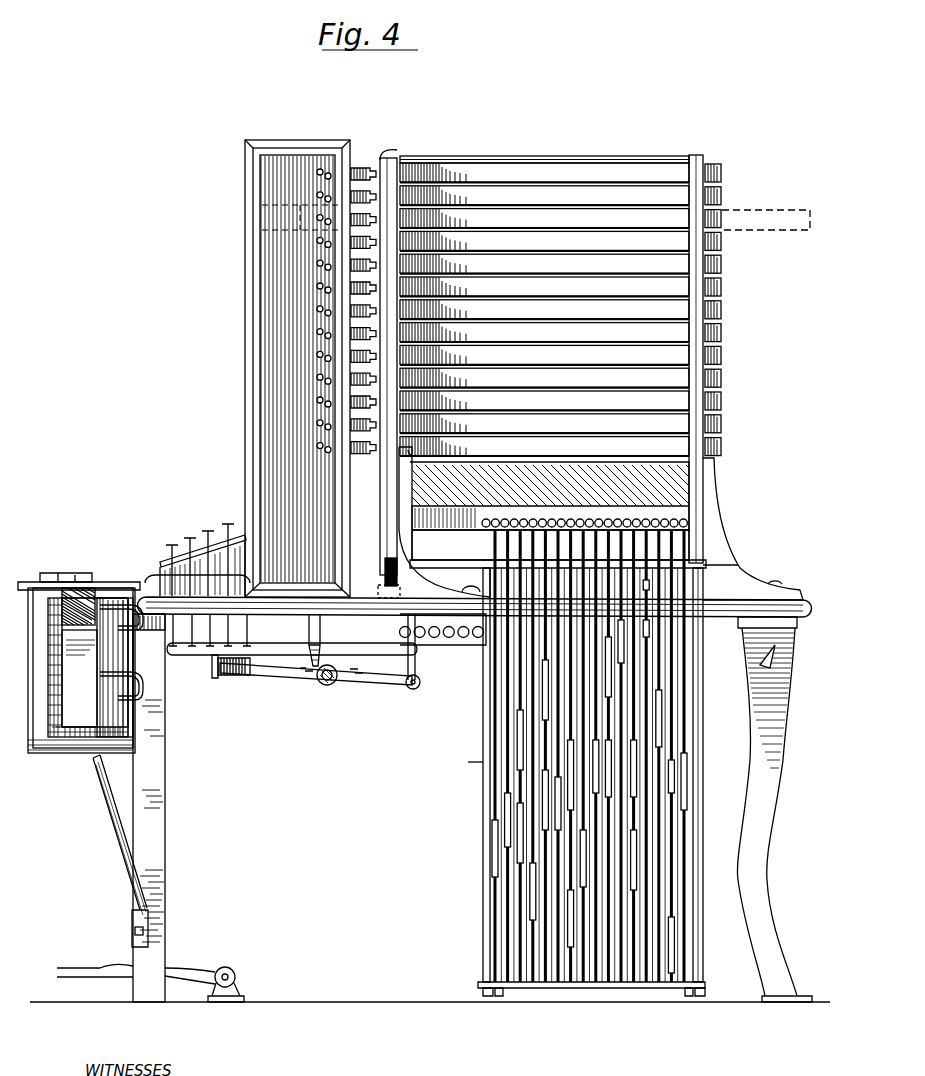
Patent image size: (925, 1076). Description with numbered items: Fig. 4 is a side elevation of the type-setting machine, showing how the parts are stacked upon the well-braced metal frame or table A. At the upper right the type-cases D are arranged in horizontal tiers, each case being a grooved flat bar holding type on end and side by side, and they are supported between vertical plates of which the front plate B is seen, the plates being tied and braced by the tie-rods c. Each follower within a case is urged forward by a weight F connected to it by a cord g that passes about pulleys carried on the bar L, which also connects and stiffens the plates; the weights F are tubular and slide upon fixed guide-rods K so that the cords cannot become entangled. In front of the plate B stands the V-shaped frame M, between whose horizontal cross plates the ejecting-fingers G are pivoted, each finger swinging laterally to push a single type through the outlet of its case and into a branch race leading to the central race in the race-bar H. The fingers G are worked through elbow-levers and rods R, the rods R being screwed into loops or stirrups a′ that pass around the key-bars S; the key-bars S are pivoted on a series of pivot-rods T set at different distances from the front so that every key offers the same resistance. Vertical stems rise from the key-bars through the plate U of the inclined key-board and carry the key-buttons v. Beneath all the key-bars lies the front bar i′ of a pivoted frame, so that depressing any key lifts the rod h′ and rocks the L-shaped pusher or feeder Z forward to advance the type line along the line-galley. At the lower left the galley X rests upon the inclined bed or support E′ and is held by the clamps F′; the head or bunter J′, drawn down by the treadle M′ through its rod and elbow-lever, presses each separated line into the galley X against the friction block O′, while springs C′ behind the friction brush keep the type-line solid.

The V-shaped frame M is at (330, 522).
The ejecting-finger G is at (355, 178).
The race-bar H is at (396, 186).
The type-case D is at (544, 306).
The springs C′ is at (700, 479).
The tie-rods c is at (468, 523).
The cord g is at (549, 484).
The front plate B is at (399, 459).
The pusher or feeder Z is at (401, 578).
The pivot-rods T is at (466, 626).
The head or bunter J′ is at (80, 568).
The key-buttons v is at (190, 560).
The plate U is at (160, 560).
The inclined bed or support E′ is at (71, 670).
The head or block O′ is at (60, 619).
The galley X is at (79, 678).
The clamps F′ is at (139, 700).
The treadle M′ is at (150, 878).
The key-bars S is at (292, 639).
The front bar i′ is at (225, 676).
The loops or stirrups a′ is at (324, 640).
The rods R is at (316, 652).
The rod h′ is at (422, 668).
The weights F is at (492, 722).
The guide-rods K is at (467, 760).
The bar L is at (710, 518).
The frame or table A is at (774, 809).